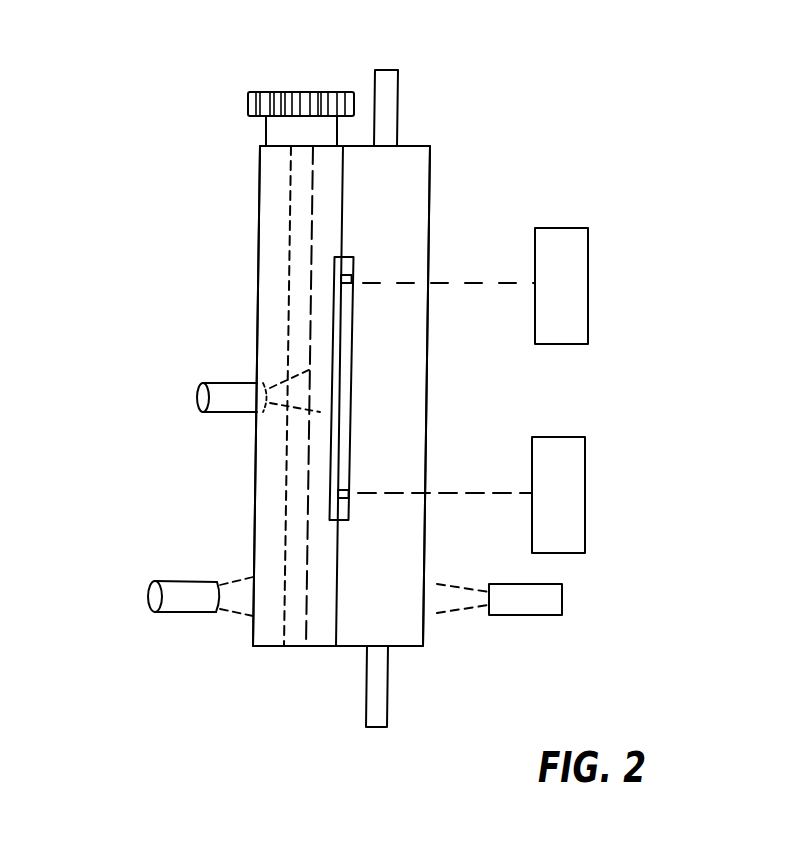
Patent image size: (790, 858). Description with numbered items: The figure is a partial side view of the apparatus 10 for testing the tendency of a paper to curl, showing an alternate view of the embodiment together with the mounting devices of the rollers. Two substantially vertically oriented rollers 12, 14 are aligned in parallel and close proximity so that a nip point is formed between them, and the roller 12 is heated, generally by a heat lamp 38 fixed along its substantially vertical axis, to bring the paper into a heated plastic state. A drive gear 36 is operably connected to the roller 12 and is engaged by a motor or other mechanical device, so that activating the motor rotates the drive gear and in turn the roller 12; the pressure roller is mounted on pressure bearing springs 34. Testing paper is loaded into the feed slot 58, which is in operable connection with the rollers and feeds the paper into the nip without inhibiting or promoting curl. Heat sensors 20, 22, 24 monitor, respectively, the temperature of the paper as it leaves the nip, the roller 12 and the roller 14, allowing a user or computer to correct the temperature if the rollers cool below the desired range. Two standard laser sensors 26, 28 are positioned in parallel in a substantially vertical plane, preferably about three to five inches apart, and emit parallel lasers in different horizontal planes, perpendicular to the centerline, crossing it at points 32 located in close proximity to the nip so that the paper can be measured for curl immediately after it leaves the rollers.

The apparatus 10 is at (97, 168).
The roller 12 is at (317, 632).
The roller 14 is at (400, 635).
The heat sensor 20 is at (218, 405).
The heat sensor 22 is at (193, 603).
The heat sensor 24 is at (532, 608).
The laser sensor 26 is at (570, 312).
The laser sensor 28 is at (563, 517).
The points 32 is at (344, 282).
The pressure bearing springs 34 is at (397, 124).
The drive gear 36 is at (307, 98).
The heat lamp 38 is at (293, 203).
The feed slot 58 is at (343, 382).